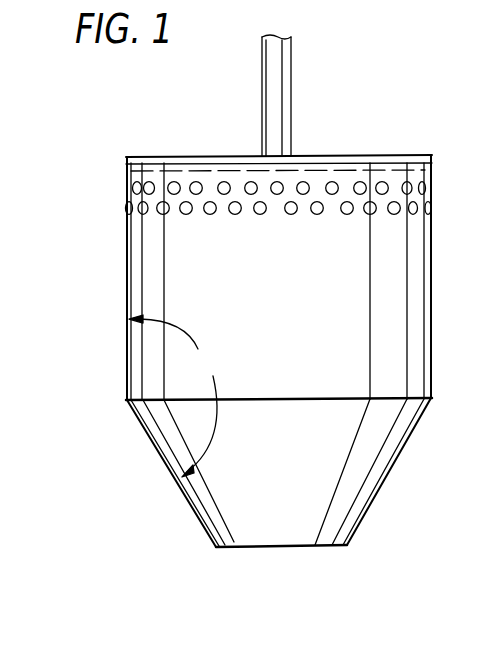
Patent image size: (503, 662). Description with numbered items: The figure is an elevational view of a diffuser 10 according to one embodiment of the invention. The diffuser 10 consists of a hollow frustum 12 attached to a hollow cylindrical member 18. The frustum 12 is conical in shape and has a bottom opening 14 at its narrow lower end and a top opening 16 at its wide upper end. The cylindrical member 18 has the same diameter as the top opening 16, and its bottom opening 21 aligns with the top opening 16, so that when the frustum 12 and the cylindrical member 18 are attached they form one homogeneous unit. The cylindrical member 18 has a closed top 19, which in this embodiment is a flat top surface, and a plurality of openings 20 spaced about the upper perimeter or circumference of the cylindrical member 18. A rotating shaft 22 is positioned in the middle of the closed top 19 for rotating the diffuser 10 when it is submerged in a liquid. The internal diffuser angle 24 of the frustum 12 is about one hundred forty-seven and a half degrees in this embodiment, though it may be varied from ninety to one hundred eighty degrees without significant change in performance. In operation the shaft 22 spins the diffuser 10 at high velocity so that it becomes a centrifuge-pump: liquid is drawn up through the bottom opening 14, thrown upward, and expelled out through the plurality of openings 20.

The diffuser 10 is at (433, 127).
The hollow frustum 12 is at (197, 516).
The bottom opening 14 is at (287, 547).
The top opening 16 is at (333, 398).
The hollow cylindrical member 18 is at (128, 375).
The closed top 19 is at (192, 157).
The plurality of openings 20 is at (269, 216).
The bottom opening 21 is at (263, 400).
The rotating shaft 22 is at (292, 103).
The internal diffuser angle 24 is at (173, 396).